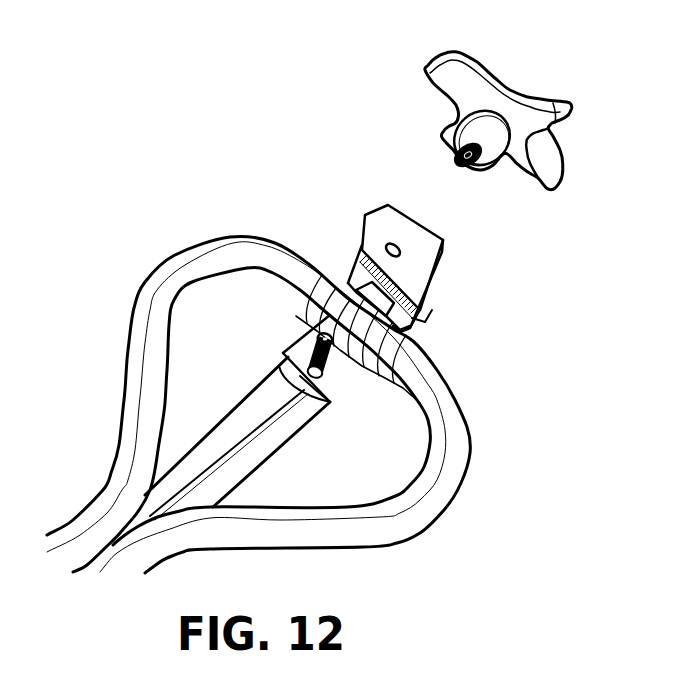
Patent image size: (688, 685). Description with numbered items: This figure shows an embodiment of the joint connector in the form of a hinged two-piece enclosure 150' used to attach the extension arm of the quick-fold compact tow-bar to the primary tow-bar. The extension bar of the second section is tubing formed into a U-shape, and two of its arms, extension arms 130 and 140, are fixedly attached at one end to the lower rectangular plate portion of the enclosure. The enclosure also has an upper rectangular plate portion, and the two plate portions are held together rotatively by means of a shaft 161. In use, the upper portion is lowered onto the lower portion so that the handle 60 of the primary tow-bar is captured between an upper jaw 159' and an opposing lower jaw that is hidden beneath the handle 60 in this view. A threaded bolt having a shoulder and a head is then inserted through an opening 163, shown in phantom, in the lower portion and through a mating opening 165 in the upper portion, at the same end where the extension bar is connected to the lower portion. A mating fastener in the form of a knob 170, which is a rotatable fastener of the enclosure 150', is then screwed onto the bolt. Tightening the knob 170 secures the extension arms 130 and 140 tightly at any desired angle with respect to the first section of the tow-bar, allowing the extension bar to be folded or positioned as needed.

The handle 60 is at (458, 437).
The knob 170 is at (530, 94).
The hinged two-piece enclosure 150' is at (299, 227).
The mating opening 165 is at (400, 250).
The upper jaw 159' is at (355, 275).
The shaft 161 is at (427, 307).
The opening 163 is at (335, 398).
The extension arm 140 is at (236, 405).
The extension arm 130 is at (282, 447).